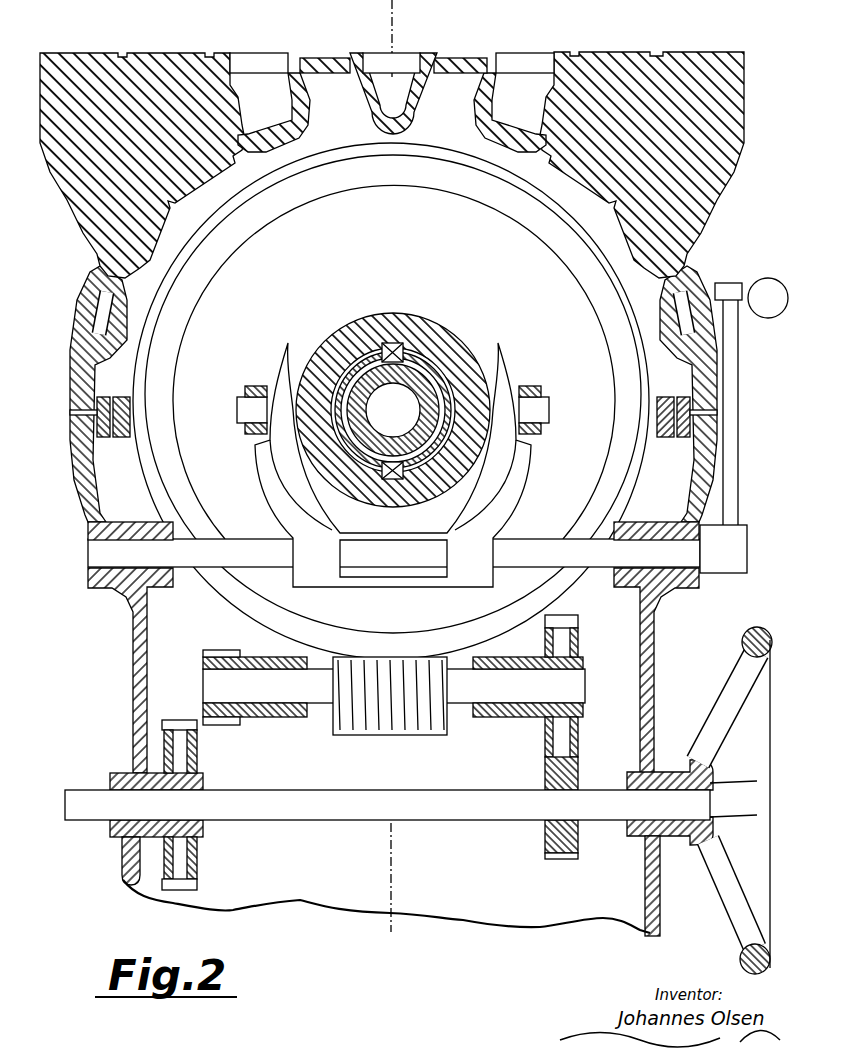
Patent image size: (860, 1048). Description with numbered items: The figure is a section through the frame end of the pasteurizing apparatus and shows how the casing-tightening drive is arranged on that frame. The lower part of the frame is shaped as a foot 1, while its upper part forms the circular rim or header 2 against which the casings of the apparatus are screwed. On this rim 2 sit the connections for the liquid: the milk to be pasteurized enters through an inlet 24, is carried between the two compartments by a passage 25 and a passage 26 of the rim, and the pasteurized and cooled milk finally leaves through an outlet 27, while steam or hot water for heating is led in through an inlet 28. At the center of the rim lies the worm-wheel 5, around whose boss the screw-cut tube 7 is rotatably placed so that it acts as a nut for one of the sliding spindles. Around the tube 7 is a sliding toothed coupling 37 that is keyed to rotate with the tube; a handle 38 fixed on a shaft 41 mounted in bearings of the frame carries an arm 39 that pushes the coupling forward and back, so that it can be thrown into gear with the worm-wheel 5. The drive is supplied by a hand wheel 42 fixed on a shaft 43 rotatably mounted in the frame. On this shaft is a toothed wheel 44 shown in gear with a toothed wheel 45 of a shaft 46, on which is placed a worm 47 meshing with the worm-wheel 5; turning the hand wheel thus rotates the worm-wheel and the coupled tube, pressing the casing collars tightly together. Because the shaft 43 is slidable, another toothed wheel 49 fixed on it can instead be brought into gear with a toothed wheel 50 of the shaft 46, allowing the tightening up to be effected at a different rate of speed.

The foot 1 is at (297, 873).
The circular rim or header 2 is at (110, 372).
The worm-wheel 5 is at (183, 297).
The tube 7 is at (415, 357).
The inlet 24 is at (260, 62).
The passage 25 is at (97, 315).
The passage 26 is at (684, 306).
The outlet 27 is at (510, 62).
The inlet 28 is at (398, 60).
The sliding toothed coupling 37 is at (340, 352).
The handle 38 is at (730, 359).
The arm 39 is at (490, 522).
The shaft 41 is at (678, 553).
The hand wheel 42 is at (727, 892).
The shaft 43 is at (500, 803).
The toothed wheel 44 is at (567, 837).
The toothed wheel 45 is at (572, 643).
The shaft 46 is at (572, 680).
The worm 47 is at (417, 720).
The toothed wheel 49 is at (192, 857).
The toothed wheel 50 is at (230, 728).